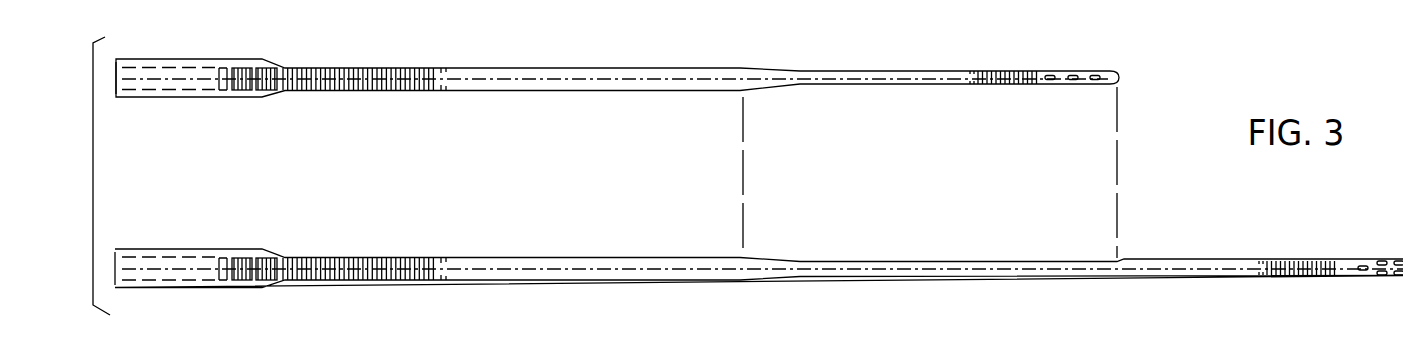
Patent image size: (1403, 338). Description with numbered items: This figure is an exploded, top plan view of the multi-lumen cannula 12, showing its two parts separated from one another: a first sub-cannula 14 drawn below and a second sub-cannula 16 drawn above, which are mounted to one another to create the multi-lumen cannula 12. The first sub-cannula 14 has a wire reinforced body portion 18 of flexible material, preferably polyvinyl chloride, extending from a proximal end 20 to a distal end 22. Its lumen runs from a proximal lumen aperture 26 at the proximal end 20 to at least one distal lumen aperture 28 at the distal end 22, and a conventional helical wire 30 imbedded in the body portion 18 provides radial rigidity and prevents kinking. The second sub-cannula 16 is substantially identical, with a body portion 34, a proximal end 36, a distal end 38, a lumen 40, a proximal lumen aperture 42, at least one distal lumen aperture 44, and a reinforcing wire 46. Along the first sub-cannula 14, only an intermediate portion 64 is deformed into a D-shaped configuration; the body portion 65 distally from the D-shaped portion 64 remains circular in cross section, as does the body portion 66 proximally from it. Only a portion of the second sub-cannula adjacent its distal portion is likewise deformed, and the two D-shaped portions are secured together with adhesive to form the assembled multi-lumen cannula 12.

The multi-lumen cannula 12 is at (1142, 88).
The first sub-cannula 14 is at (365, 282).
The second sub-cannula 16 is at (365, 65).
The body portion 18 is at (1012, 261).
The proximal end 20 is at (197, 248).
The distal end 22 is at (1305, 277).
The proximal lumen aperture 26 is at (112, 270).
The distal lumen aperture 28 is at (1397, 260).
The helical wire 30 is at (628, 280).
The body portion 34 is at (842, 71).
The proximal end 36 is at (180, 60).
The distal end 38 is at (1016, 71).
The lumen 40 is at (930, 212).
The proximal lumen aperture 42 is at (112, 78).
The distal lumen aperture 44 is at (1093, 82).
The reinforcing wire 46 is at (627, 68).
The intermediate portion 64 is at (930, 261).
The body portion 65 is at (1258, 259).
The body portion 66 is at (677, 257).